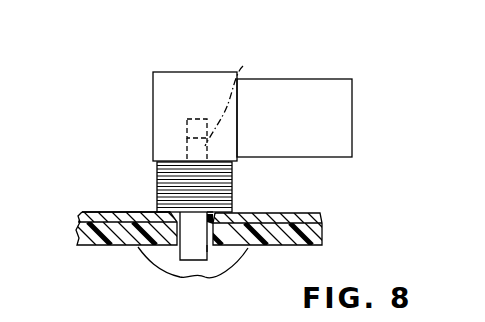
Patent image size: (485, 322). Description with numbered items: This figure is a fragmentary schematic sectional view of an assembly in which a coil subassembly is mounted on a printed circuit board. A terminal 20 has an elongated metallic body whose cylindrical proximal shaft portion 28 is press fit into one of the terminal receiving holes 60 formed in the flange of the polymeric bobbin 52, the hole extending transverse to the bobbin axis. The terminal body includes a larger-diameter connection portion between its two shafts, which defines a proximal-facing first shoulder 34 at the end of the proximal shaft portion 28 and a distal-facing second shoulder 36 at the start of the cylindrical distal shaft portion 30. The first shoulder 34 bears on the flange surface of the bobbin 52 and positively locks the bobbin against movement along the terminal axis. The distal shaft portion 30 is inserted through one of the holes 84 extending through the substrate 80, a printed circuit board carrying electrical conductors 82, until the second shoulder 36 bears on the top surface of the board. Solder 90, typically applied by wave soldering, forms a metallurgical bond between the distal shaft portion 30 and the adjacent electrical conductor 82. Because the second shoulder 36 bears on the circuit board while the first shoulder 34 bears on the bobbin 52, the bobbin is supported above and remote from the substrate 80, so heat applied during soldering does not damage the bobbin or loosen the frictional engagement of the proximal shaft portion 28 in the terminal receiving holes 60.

The terminal 20 is at (294, 131).
The proximal shaft portion 28 is at (234, 100).
The distal shaft portion 30 is at (188, 237).
The first shoulder 34 is at (168, 163).
The second shoulder 36 is at (214, 221).
The bobbin 52 is at (170, 95).
The terminal receiving holes 60 is at (194, 118).
The substrate 80 is at (74, 223).
The electrical conductors 82 is at (110, 212).
The holes 84 is at (212, 252).
The solder 90 is at (219, 279).